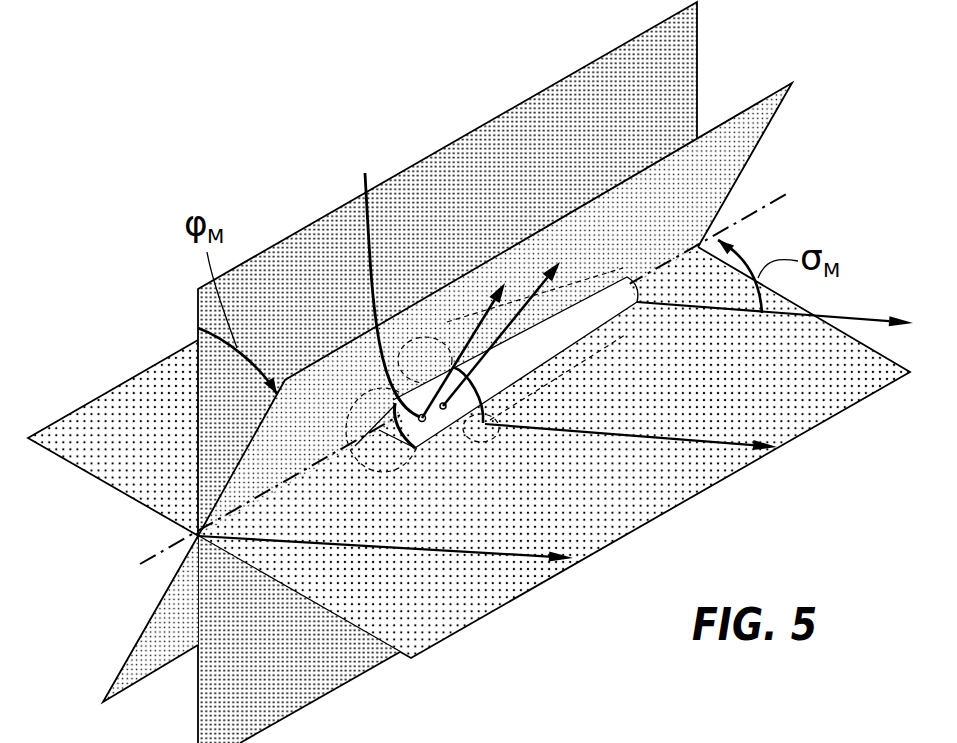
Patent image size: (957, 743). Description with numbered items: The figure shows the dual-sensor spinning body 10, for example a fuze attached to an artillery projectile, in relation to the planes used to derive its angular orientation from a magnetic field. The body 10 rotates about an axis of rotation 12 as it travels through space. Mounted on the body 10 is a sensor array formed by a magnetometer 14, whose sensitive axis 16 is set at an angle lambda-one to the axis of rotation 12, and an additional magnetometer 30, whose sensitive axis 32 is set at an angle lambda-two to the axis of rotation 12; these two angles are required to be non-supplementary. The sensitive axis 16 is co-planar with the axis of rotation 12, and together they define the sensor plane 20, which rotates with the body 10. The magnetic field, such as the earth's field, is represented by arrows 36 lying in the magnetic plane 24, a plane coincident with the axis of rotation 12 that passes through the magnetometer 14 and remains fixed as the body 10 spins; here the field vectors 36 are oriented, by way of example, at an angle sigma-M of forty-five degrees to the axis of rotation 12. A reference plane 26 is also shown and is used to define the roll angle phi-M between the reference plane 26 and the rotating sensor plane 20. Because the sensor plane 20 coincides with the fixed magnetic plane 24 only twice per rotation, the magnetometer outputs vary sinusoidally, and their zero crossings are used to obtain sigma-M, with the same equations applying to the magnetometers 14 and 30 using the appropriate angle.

The spinning body 10 is at (628, 276).
The axis of rotation 12 is at (784, 194).
The magnetometer 14 is at (446, 409).
The sensitive axis 16 is at (530, 305).
The sensor plane 20 is at (770, 123).
The magnetic plane 24 is at (663, 514).
The reference plane 26 is at (555, 85).
The additional magnetometer 30 is at (386, 277).
The sensitive axis 32 is at (478, 336).
The magnetic field vectors 36 is at (871, 318).